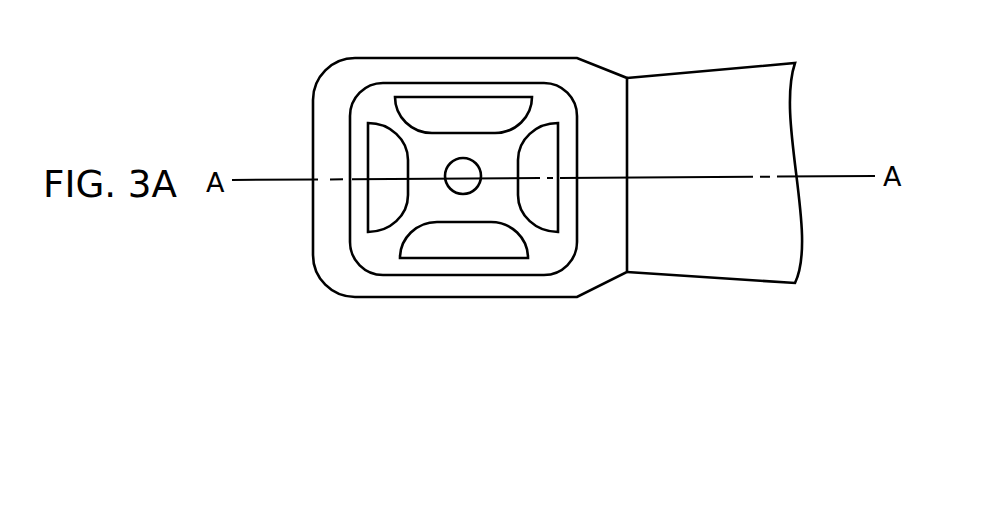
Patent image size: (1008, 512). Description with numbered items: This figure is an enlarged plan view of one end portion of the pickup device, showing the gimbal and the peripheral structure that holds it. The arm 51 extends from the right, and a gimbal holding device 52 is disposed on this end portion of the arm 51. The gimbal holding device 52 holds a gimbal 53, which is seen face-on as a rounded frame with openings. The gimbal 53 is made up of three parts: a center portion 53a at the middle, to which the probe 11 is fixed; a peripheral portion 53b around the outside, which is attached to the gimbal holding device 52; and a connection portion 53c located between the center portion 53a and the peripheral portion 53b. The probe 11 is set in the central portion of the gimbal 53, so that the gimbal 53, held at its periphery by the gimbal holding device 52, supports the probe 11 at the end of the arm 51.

The probe 11 is at (463, 194).
The arm 51 is at (717, 78).
The gimbal holding device 52 is at (548, 63).
The gimbal 53 is at (380, 93).
The center portion 53a is at (495, 202).
The peripheral portion 53b is at (425, 267).
The connection portion 53c is at (387, 247).